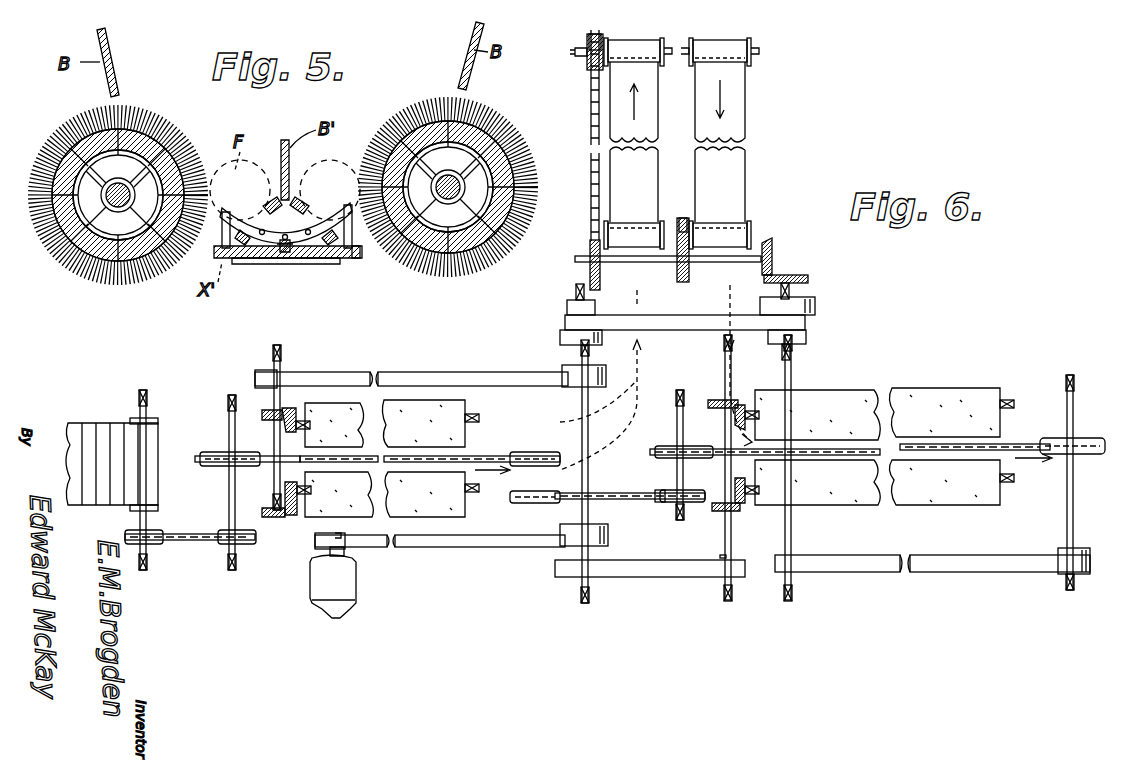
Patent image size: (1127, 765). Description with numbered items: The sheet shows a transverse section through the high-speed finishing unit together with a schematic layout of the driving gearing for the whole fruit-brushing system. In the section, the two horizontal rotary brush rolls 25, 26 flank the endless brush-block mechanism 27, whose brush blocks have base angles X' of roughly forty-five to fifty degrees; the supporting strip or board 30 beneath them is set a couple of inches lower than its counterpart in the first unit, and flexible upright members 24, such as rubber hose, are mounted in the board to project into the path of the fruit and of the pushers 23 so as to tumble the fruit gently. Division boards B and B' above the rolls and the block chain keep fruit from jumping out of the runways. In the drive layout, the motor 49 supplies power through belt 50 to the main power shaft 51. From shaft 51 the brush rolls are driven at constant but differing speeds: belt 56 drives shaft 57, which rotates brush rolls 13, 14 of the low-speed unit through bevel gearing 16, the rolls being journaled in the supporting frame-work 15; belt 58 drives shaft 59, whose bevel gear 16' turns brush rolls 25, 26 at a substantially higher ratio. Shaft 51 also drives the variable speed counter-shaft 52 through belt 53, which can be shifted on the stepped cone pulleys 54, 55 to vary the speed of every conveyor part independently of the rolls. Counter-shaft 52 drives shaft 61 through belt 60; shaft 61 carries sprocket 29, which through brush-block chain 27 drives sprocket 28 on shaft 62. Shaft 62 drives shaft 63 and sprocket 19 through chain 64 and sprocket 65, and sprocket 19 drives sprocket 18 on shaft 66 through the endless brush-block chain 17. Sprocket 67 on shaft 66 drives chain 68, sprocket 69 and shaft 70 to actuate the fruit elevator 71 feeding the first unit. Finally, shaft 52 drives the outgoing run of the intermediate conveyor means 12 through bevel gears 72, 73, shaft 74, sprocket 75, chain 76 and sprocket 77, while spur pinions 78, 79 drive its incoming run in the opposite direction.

In FIG. 6, the conveyor means 12 is at (745, 28).
In FIG. 6, the brush roll 13 is at (337, 410).
In FIG. 6, the brush roll 14 is at (432, 515).
In FIG. 6, the supporting frame-work 15 is at (296, 408).
In FIG. 6, the bevel gearing 16 is at (286, 515).
In FIG. 6, the bevel gear 16' is at (728, 468).
In FIG. 6, the endless chain 17 is at (485, 456).
In FIG. 6, the sprocket 18 is at (205, 455).
In FIG. 6, the sprocket 19 is at (548, 452).
In FIG. 5, the pushers 23 is at (330, 185).
In FIG. 5, the upright members 24 is at (356, 246).
In FIG. 5, the brush roll 25 is at (70, 258).
In FIG. 6, the brush roll 25 is at (940, 398).
In FIG. 5, the brush roll 26 is at (446, 255).
In FIG. 6, the brush roll 26 is at (985, 492).
In FIG. 5, the endless brush-block mechanism 27 is at (270, 255).
In FIG. 6, the endless brush-block mechanism 27 is at (1032, 442).
In FIG. 6, the sprocket 28 is at (665, 448).
In FIG. 6, the sprocket 29 is at (1086, 437).
In FIG. 5, the supporting strip or board 30 is at (322, 262).
In FIG. 6, the motor 49 is at (345, 588).
In FIG. 6, the belt 50 is at (510, 548).
In FIG. 6, the main power shaft 51 is at (588, 495).
In FIG. 6, the variable speed counter-shaft 52 is at (795, 378).
In FIG. 6, the belt 53 is at (630, 318).
In FIG. 6, the stepped cone pulley 54 is at (560, 336).
In FIG. 6, the stepped cone pulley 55 is at (772, 305).
In FIG. 6, the belt 56 is at (436, 380).
In FIG. 6, the shaft 57 is at (274, 432).
In FIG. 6, the belt 58 is at (663, 578).
In FIG. 6, the shaft 59 is at (735, 548).
In FIG. 6, the belt 60 is at (865, 560).
In FIG. 6, the shaft 61 is at (1074, 524).
In FIG. 6, the shaft 62 is at (685, 410).
In FIG. 6, the shaft 63 is at (590, 392).
In FIG. 6, the chain 64 is at (652, 502).
In FIG. 6, the sprocket 65 is at (538, 503).
In FIG. 6, the shaft 66 is at (229, 490).
In FIG. 6, the sprocket 67 is at (244, 545).
In FIG. 6, the chain 68 is at (196, 542).
In FIG. 6, the sprocket 69 is at (150, 545).
In FIG. 6, the shaft 70 is at (146, 522).
In FIG. 6, the fruit elevator 71 is at (106, 430).
In FIG. 6, the bevel gear 72 is at (792, 277).
In FIG. 6, the bevel gear 73 is at (773, 252).
In FIG. 6, the shaft 74 is at (667, 264).
In FIG. 6, the sprocket 75 is at (588, 248).
In FIG. 6, the chain 76 is at (590, 204).
In FIG. 6, the sprocket 77 is at (588, 62).
In FIG. 6, the spur pinion 78 is at (688, 270).
In FIG. 6, the spur pinion 79 is at (682, 220).